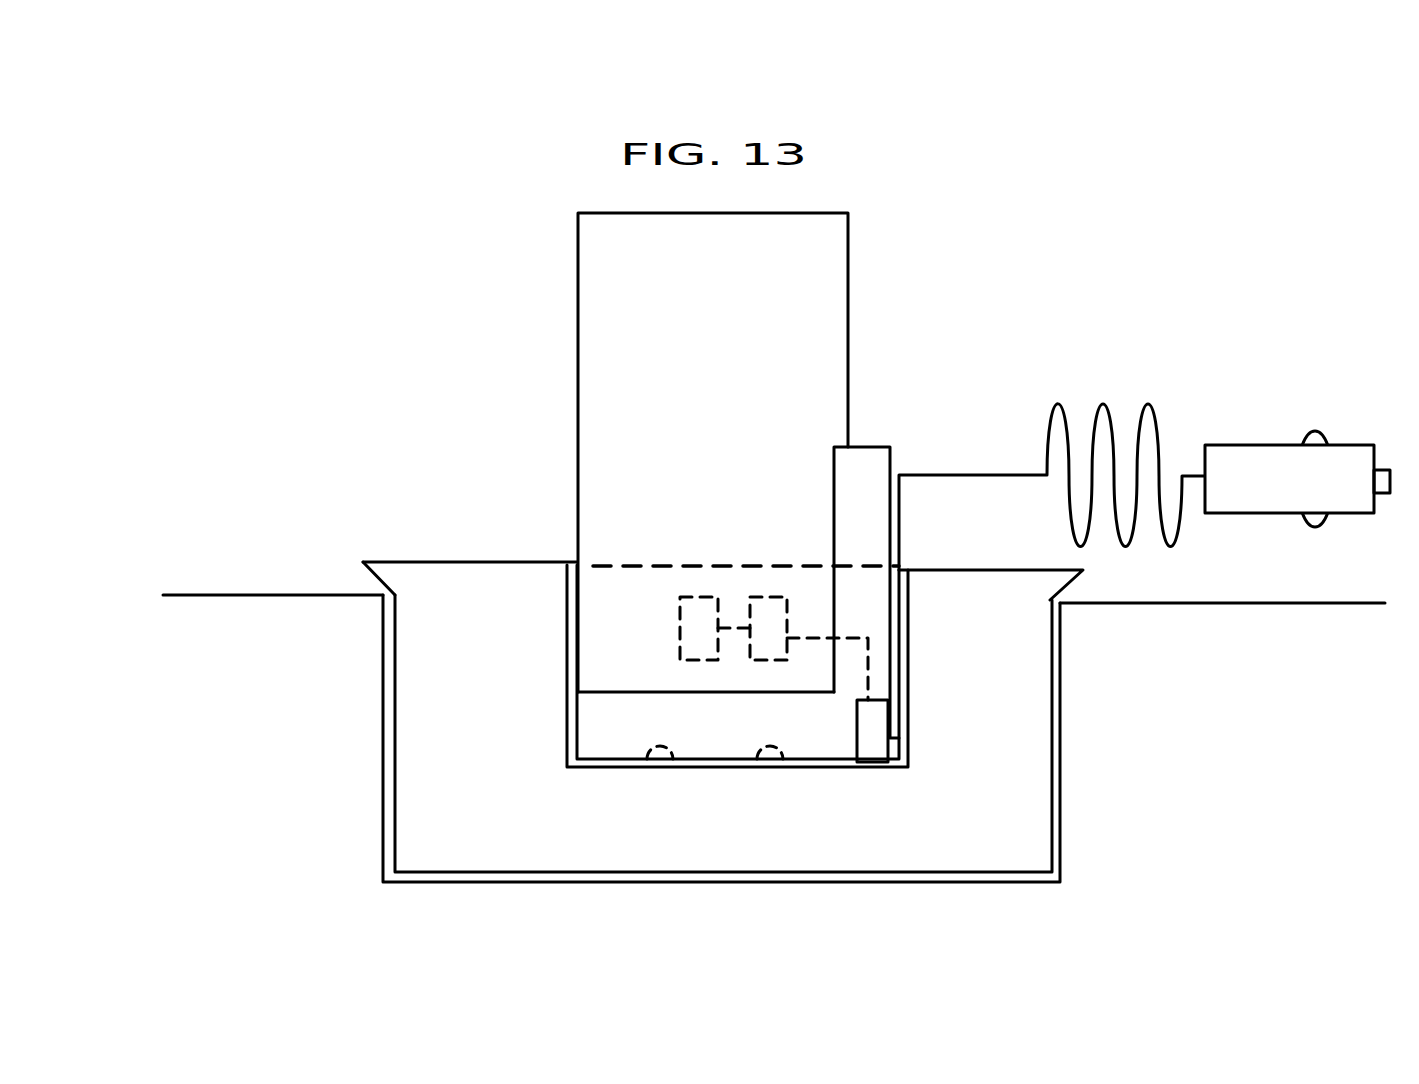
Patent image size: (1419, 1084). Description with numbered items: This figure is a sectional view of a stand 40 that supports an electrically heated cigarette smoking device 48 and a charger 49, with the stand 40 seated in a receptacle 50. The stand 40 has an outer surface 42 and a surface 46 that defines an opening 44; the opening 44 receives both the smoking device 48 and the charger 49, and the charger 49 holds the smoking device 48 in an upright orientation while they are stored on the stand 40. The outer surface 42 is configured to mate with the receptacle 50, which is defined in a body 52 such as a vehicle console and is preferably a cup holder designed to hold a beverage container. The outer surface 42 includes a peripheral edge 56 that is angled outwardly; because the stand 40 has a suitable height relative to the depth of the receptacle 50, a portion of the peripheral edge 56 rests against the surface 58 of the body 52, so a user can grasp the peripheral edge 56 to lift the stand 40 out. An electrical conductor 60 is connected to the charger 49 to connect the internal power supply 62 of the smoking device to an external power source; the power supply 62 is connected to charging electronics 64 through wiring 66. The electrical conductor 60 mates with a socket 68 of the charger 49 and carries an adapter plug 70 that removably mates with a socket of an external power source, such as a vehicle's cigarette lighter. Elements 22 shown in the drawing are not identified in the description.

The heating elements 22 is at (658, 753).
The stand 40 is at (438, 516).
The outer surface 42 is at (1052, 760).
The opening 44 is at (576, 565).
The surface 46 is at (567, 633).
The electrically heated cigarette smoking device 48 is at (871, 299).
The charger 49 is at (884, 422).
The receptacle 50 is at (388, 593).
The body 52 is at (199, 572).
The peripheral edge 56 is at (1067, 588).
The surface 58 is at (1202, 603).
The electrical conductor 60 is at (1181, 410).
The power supply 62 is at (687, 597).
The charging electronics 64 is at (777, 597).
The wiring 66 is at (870, 667).
The socket 68 is at (857, 730).
The adapter plug 70 is at (1350, 447).